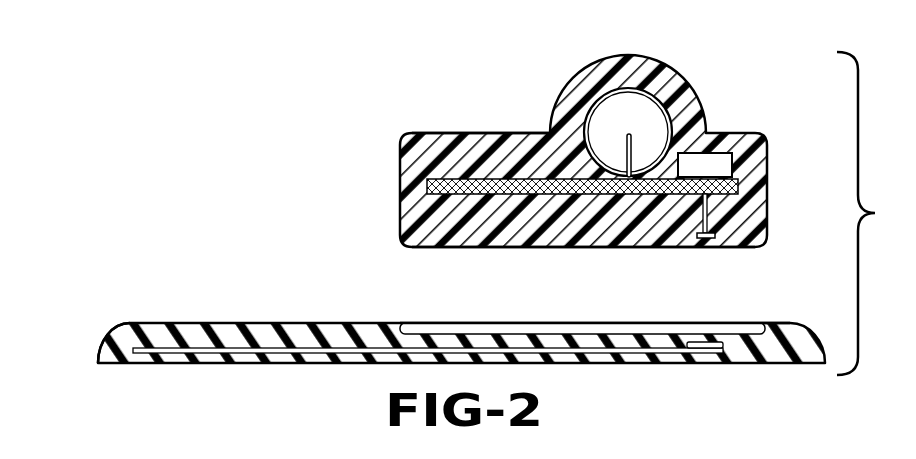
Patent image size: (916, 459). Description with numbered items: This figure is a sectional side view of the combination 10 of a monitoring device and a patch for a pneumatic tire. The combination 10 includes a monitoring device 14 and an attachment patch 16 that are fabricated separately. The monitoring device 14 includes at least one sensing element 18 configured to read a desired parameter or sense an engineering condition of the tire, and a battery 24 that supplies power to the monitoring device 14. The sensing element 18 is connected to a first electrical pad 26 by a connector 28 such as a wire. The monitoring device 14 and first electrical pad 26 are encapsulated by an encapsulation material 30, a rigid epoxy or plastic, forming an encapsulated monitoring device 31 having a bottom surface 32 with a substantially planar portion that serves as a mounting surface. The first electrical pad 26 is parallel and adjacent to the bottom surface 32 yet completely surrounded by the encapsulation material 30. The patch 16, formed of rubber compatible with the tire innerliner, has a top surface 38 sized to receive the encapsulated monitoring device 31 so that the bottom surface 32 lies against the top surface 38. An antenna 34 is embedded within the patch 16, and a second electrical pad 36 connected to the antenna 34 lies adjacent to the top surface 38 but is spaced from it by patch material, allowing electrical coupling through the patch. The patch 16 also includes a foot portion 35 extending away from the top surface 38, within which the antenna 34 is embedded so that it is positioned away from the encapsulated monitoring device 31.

The combination 10 is at (876, 213).
The monitoring device 14 is at (518, 170).
The attachment patch 16 is at (172, 371).
The sensing element 18 is at (716, 158).
The battery 24 is at (619, 106).
The first electrical pad 26 is at (708, 232).
The connector 28 is at (717, 232).
The encapsulation material 30 is at (404, 152).
The encapsulated monitoring device 31 is at (451, 121).
The bottom surface 32 is at (562, 248).
The antenna 34 is at (313, 353).
The foot portion 35 is at (108, 342).
The second electrical pad 36 is at (715, 342).
The top surface 38 is at (447, 337).